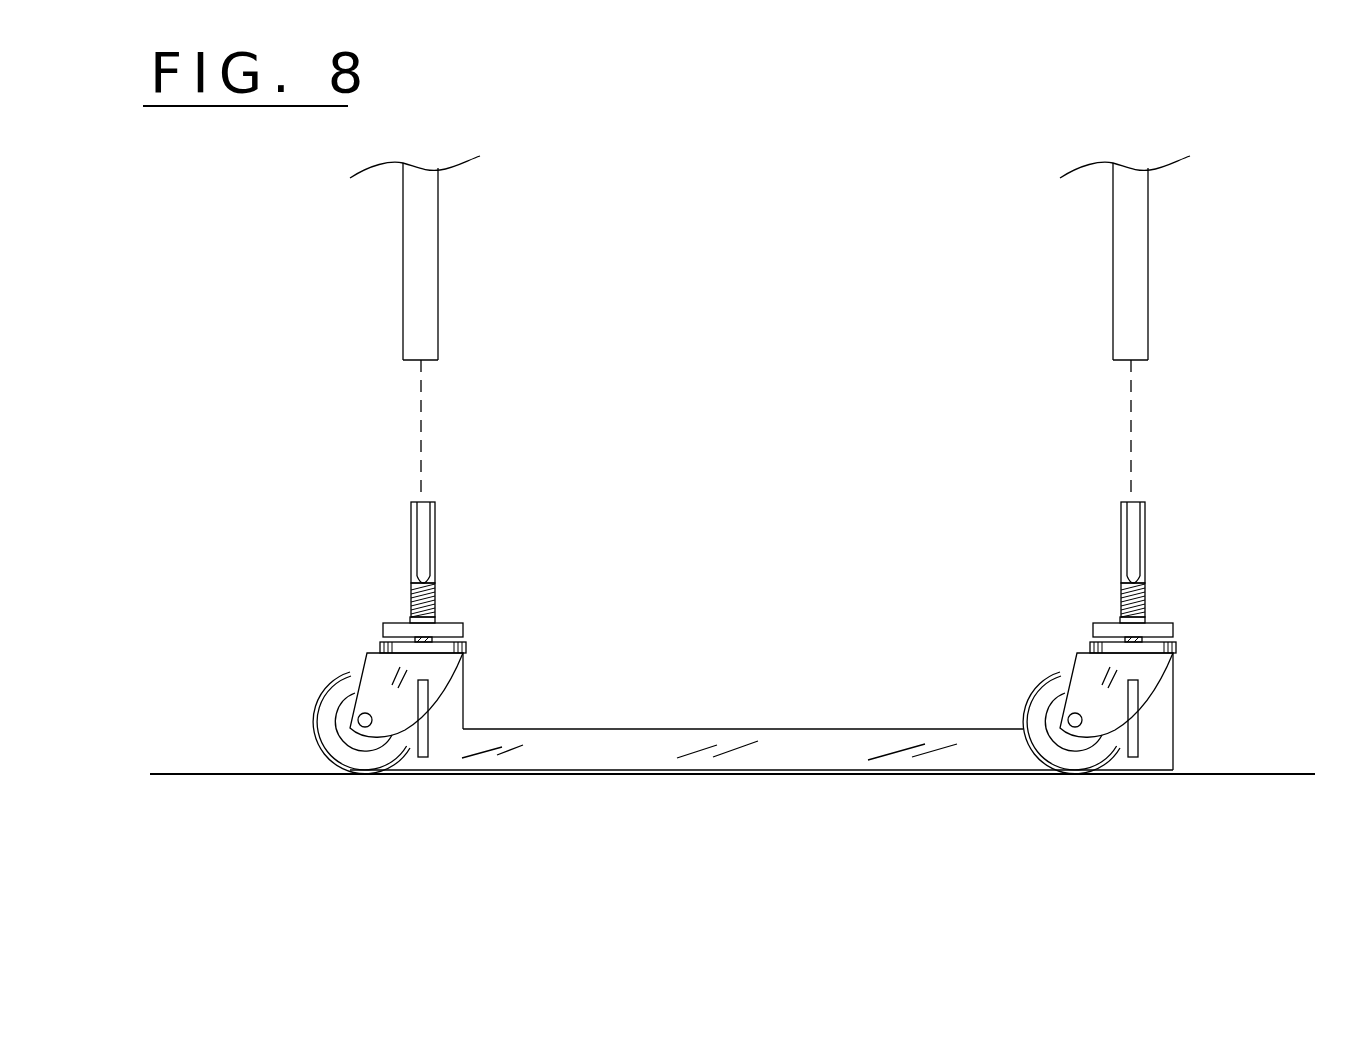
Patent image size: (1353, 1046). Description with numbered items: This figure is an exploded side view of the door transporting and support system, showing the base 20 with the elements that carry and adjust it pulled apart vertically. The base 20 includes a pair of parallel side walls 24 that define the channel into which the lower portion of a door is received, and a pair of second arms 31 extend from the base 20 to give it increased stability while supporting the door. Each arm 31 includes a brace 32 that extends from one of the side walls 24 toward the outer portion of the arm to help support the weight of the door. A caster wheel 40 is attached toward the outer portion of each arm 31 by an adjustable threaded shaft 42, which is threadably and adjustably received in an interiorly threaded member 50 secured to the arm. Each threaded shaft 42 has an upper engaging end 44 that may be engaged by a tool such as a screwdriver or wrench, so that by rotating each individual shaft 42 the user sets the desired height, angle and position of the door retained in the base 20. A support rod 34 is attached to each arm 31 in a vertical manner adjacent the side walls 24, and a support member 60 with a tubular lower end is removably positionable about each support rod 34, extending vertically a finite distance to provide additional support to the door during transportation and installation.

The base 20 is at (661, 722).
The side wall 24 is at (760, 760).
The second arm 31 is at (383, 637).
The brace 32 is at (420, 755).
The support rod 34 is at (430, 508).
The caster wheel 40 is at (332, 712).
The threaded shaft 42 is at (435, 607).
The upper engaging end 44 is at (435, 575).
The interiorly threaded member 50 is at (385, 627).
The support member 60 is at (415, 220).